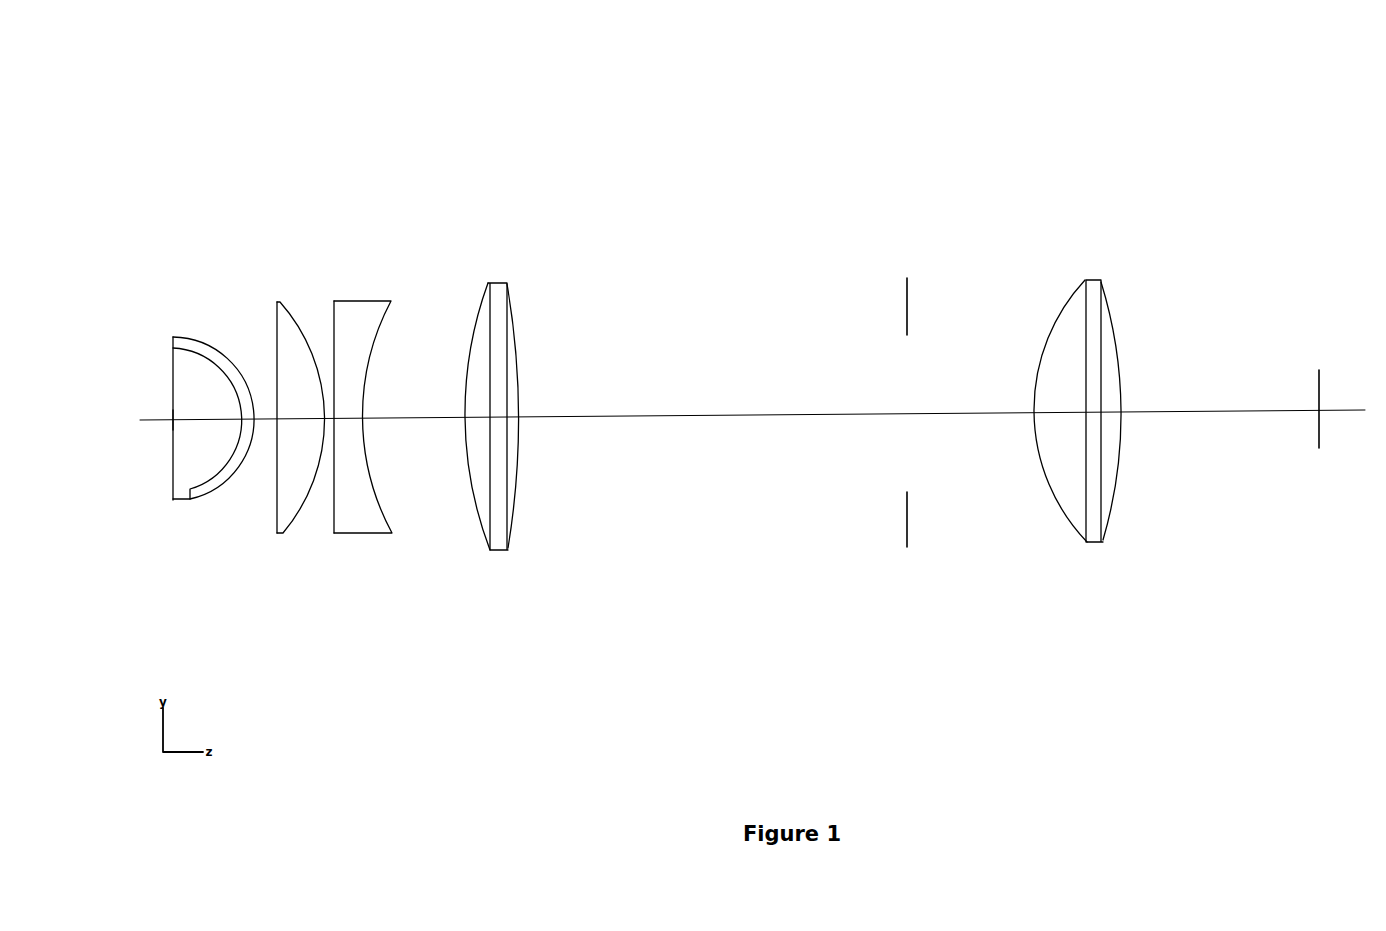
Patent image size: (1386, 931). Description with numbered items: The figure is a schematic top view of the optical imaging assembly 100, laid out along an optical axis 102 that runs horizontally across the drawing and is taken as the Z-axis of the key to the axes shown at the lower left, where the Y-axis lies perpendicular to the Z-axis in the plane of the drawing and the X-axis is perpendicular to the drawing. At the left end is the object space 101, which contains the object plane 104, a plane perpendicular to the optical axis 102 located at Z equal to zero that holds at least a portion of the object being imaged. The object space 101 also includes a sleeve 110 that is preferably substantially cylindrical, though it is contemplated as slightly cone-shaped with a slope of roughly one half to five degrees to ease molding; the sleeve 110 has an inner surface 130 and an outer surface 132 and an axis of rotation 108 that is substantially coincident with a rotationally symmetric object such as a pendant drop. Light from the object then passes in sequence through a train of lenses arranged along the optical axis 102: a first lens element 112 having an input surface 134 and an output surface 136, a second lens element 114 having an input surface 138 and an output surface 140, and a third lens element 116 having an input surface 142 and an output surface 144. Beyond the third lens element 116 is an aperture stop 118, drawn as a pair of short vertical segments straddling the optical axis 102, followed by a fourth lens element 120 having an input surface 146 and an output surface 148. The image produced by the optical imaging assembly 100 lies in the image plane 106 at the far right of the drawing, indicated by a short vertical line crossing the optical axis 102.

The optical imaging assembly 100 is at (781, 165).
The object space 101 is at (240, 622).
The optical axis 102 is at (744, 412).
The object plane 104 is at (172, 375).
The image plane 106 is at (1320, 388).
The axis of rotation 108 is at (172, 420).
The sleeve 110 is at (200, 430).
The first lens element 112 is at (277, 439).
The second lens element 114 is at (362, 415).
The third lens element 116 is at (503, 416).
The aperture stop 118 is at (908, 306).
The fourth lens element 120 is at (1102, 416).
The inner surface 130 is at (188, 490).
The outer surface 132 is at (206, 500).
The input surface 134 is at (275, 470).
The output surface 136 is at (293, 532).
The input surface 138 is at (332, 500).
The output surface 140 is at (381, 497).
The input surface 142 is at (476, 520).
The output surface 144 is at (514, 494).
The input surface 146 is at (1068, 520).
The output surface 148 is at (1115, 500).